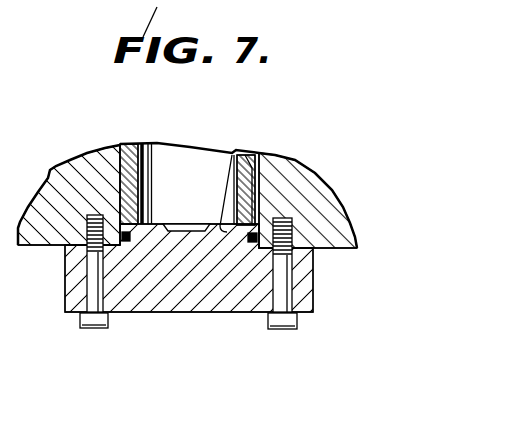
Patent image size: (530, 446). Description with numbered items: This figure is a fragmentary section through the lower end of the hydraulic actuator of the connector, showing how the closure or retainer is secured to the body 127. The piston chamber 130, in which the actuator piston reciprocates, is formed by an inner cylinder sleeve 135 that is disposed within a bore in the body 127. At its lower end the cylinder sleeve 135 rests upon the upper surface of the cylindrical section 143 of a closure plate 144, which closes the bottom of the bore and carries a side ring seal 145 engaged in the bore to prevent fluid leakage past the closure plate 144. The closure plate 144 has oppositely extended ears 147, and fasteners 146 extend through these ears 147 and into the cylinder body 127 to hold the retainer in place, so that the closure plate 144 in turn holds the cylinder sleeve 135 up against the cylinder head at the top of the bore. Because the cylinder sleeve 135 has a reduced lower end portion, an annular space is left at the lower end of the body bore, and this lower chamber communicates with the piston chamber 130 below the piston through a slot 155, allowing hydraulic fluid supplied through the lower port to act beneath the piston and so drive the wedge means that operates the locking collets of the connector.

The body 127 is at (282, 182).
The piston chamber 130 is at (197, 163).
The cylinder sleeve 135 is at (130, 156).
The cylindrical section 143 is at (248, 152).
The closure plate 144 is at (180, 297).
The side ring seal 145 is at (127, 232).
The fasteners 146 is at (95, 318).
The ears 147 is at (72, 265).
The slot 155 is at (226, 220).